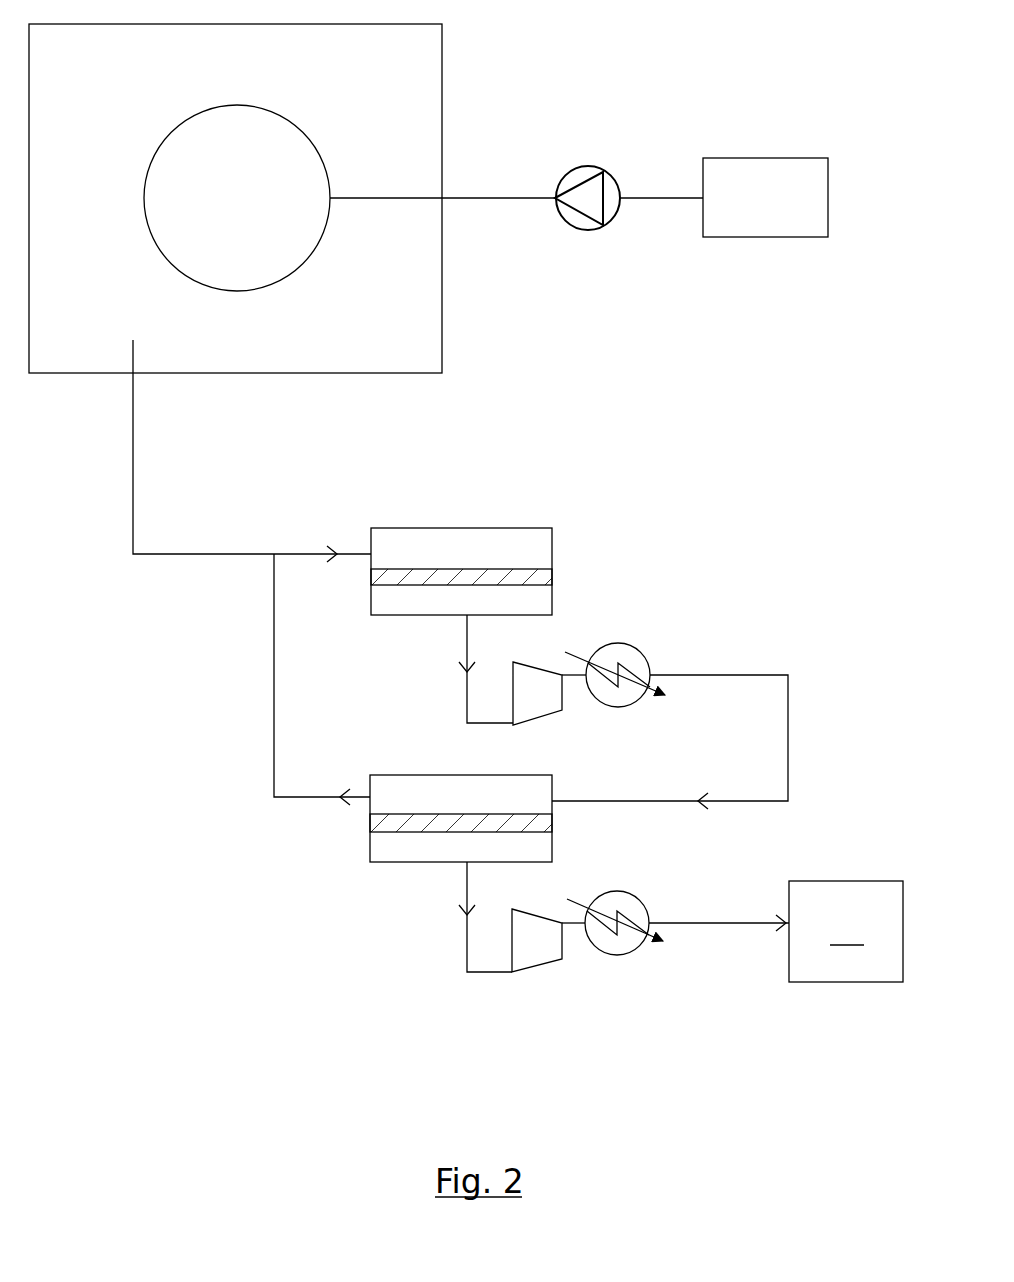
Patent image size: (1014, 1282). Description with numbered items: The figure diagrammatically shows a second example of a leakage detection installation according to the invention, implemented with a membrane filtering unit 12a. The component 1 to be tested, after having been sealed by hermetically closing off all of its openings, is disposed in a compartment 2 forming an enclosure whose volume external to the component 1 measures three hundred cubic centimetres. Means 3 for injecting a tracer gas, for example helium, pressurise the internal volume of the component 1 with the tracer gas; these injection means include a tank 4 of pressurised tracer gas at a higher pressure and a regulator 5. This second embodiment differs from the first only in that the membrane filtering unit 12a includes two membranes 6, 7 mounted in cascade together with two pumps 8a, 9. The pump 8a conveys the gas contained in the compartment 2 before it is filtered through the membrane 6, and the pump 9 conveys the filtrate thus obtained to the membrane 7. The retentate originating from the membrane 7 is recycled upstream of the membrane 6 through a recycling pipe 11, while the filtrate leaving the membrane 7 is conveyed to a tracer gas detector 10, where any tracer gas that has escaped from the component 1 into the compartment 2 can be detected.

The component 1 is at (246, 213).
The compartment 2 is at (442, 338).
The means for injecting a tracer gas 3 is at (516, 168).
The tank 4 is at (765, 238).
The regulator 5 is at (582, 230).
The membrane 6 is at (547, 528).
The membrane 7 is at (397, 862).
The pump 8a is at (625, 707).
The pump 9 is at (622, 955).
The tracer gas detector 10 is at (846, 931).
The recycling pipe 11 is at (274, 693).
The membrane filtering unit 12a is at (716, 565).